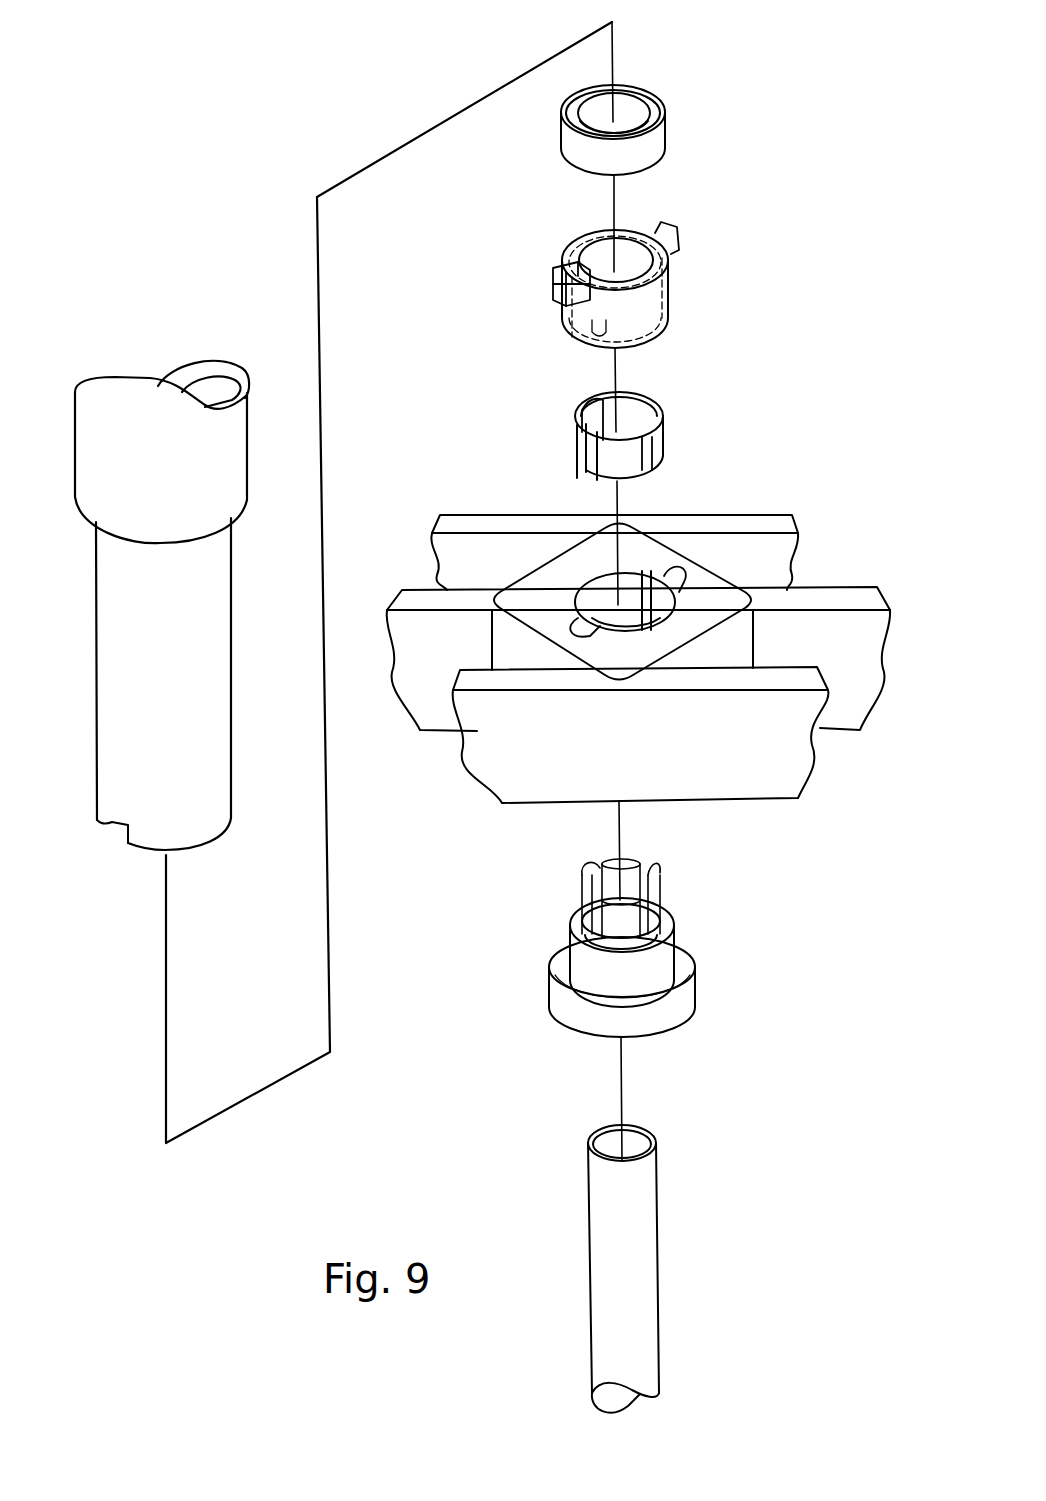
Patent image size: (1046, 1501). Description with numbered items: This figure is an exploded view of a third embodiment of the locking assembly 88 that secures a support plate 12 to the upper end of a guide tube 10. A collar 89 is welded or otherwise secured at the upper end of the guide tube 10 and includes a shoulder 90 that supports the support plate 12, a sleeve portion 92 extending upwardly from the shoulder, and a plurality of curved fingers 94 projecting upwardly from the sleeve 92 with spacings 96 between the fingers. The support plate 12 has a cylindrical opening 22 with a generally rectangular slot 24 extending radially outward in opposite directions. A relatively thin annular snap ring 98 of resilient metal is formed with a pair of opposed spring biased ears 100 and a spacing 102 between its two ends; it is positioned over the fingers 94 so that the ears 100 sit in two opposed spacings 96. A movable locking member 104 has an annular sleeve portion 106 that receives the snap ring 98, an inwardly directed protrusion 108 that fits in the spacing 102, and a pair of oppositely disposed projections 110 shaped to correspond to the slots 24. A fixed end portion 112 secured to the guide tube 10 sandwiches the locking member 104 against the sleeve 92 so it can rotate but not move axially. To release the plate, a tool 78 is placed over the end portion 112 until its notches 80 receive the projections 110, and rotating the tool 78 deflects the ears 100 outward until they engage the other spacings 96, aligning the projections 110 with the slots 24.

The guide tube 10 is at (640, 1275).
The support plate 12 is at (790, 750).
The cylindrical opening 22 is at (630, 602).
The rectangular slot 24 is at (668, 583).
The tool 78 is at (161, 619).
The notch 80 is at (110, 828).
The locking assembly 88 is at (659, 629).
The collar 89 is at (630, 916).
The shoulder 90 is at (688, 995).
The sleeve portion 92 is at (570, 925).
The curved fingers 94 is at (658, 888).
The spacings 96 is at (598, 866).
The snap ring 98 is at (645, 424).
The spring biased ears 100 is at (592, 398).
The spacing 102 is at (590, 478).
The locking member 104 is at (623, 294).
The annular sleeve portion 106 is at (650, 316).
The protrusion 108 is at (598, 336).
The projections 110 is at (665, 228).
The fixed end portion 112 is at (658, 137).